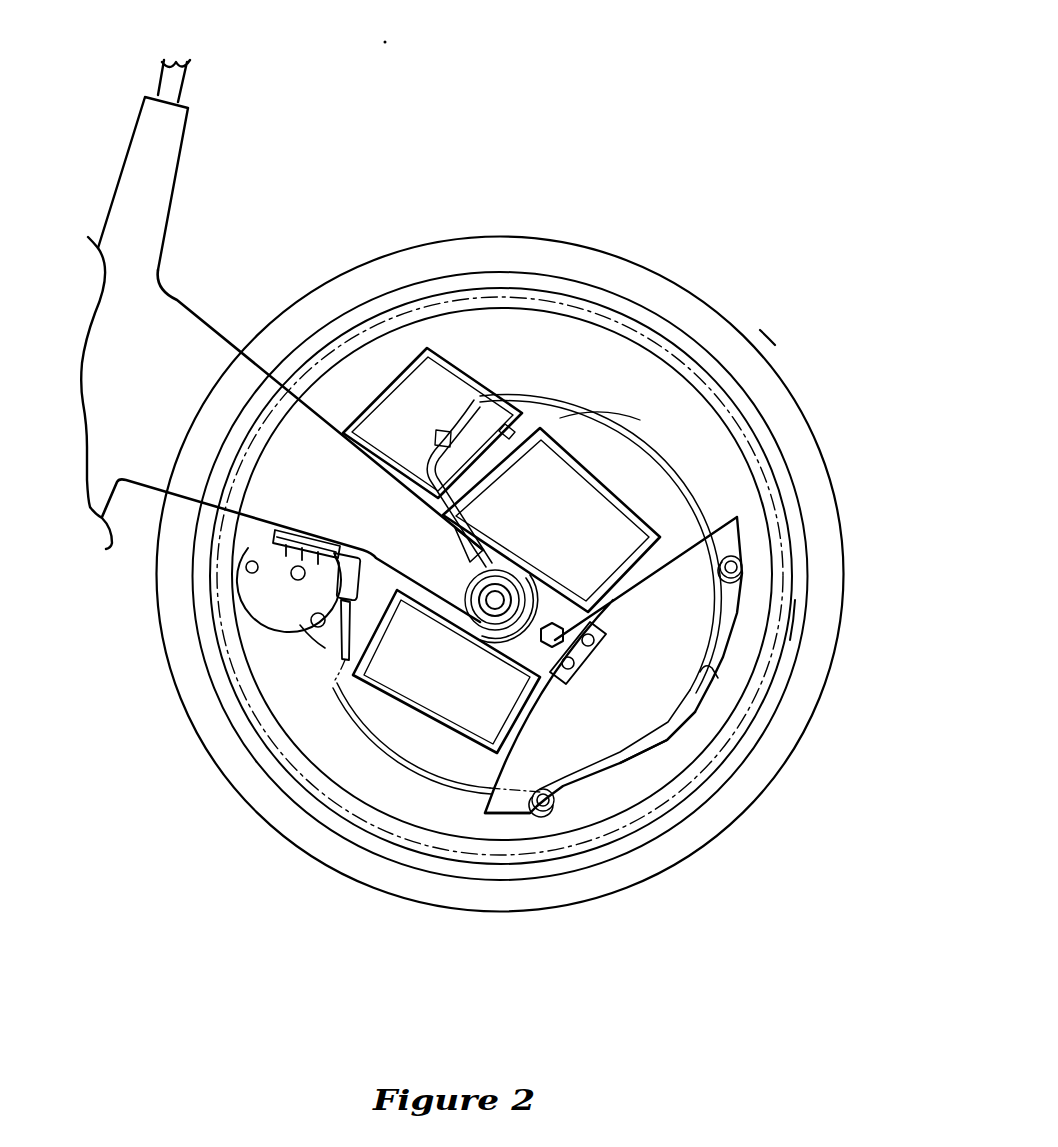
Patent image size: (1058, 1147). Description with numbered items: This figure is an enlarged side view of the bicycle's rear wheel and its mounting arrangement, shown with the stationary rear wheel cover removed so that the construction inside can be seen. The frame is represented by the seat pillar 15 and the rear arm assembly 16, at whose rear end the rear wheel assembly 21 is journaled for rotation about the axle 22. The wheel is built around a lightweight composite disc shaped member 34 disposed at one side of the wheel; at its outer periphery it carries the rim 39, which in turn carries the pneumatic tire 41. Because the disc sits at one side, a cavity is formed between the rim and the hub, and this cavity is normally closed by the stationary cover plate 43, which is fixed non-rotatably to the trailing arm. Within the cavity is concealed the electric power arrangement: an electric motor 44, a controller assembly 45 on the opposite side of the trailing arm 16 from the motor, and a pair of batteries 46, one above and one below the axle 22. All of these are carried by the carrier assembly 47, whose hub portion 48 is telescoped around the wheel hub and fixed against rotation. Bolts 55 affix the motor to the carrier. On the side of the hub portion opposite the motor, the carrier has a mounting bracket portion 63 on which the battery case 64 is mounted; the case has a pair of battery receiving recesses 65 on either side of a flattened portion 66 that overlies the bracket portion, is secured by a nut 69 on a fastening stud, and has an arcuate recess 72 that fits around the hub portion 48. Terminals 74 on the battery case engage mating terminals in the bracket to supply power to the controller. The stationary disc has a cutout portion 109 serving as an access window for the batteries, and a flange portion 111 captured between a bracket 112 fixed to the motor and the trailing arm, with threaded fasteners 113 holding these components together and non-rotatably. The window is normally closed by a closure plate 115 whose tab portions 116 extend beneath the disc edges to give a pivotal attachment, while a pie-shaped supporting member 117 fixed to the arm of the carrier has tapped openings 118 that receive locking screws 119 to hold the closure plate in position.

The seat pillar 15 is at (170, 147).
The rear arm assembly 16 is at (187, 338).
The rear wheel assembly 21 is at (562, 236).
The axle 22 is at (500, 567).
The disc shaped member 34 is at (735, 457).
The rim 39 is at (635, 300).
The pneumatic tire 41 is at (740, 340).
The stationary cover plate 43 is at (680, 800).
The electric motor 44 is at (290, 628).
The controller assembly 45 is at (410, 393).
The batteries 46 is at (528, 455).
The carrier assembly 47 is at (602, 648).
The hub portion 48 is at (520, 593).
The bolts 55 is at (247, 567).
The mounting bracket portion 63 is at (580, 657).
The battery case 64 is at (645, 492).
The battery receiving recesses 65 is at (567, 423).
The flattened portion 66 is at (370, 418).
The nut 69 is at (797, 617).
The arcuate recess 72 is at (473, 643).
The terminals 74 is at (596, 636).
The cutout portion 109 is at (750, 677).
The flange portion 111 is at (312, 526).
The bracket 112 is at (268, 610).
The threaded fasteners 113 is at (262, 535).
The closure plate 115 is at (453, 785).
The tab portions 116 is at (441, 430).
The pie-shaped supporting member 117 is at (655, 695).
The tapped openings 118 is at (740, 550).
The locking screws 119 is at (743, 573).